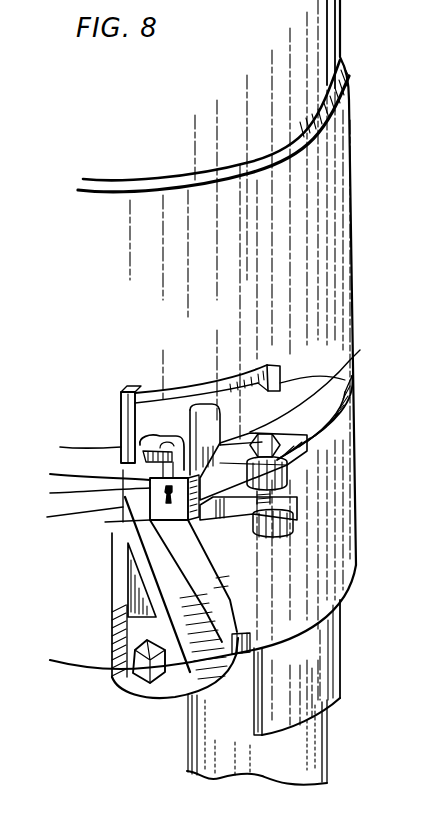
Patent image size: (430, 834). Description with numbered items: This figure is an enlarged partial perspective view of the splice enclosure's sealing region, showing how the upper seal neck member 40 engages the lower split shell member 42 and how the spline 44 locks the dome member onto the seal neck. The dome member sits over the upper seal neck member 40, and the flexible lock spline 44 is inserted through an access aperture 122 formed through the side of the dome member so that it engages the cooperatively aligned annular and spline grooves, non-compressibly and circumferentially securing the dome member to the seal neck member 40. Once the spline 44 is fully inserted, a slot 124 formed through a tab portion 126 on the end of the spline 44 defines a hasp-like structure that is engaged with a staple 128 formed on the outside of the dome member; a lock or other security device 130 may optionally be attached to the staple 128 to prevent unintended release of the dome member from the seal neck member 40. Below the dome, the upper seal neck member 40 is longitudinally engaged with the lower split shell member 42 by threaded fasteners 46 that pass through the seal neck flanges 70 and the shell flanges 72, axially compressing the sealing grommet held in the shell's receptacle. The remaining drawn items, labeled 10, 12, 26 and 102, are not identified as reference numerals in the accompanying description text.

The supporting apparatus 10 is at (420, 208).
The tank 12 is at (421, 52).
The post 26 is at (331, 726).
The upper seal neck member 40 is at (346, 377).
The lower split shell member 42 is at (357, 550).
The spline 44 is at (193, 382).
The fastener 46 is at (350, 420).
The seal neck flanges 70 is at (290, 473).
The shell flanges 72 is at (262, 531).
The bolt 102 is at (125, 685).
The access aperture 122 is at (300, 393).
The slot 124 is at (147, 440).
The tab portion 126 is at (157, 410).
The staple 128 is at (123, 440).
The lock 130 is at (148, 518).